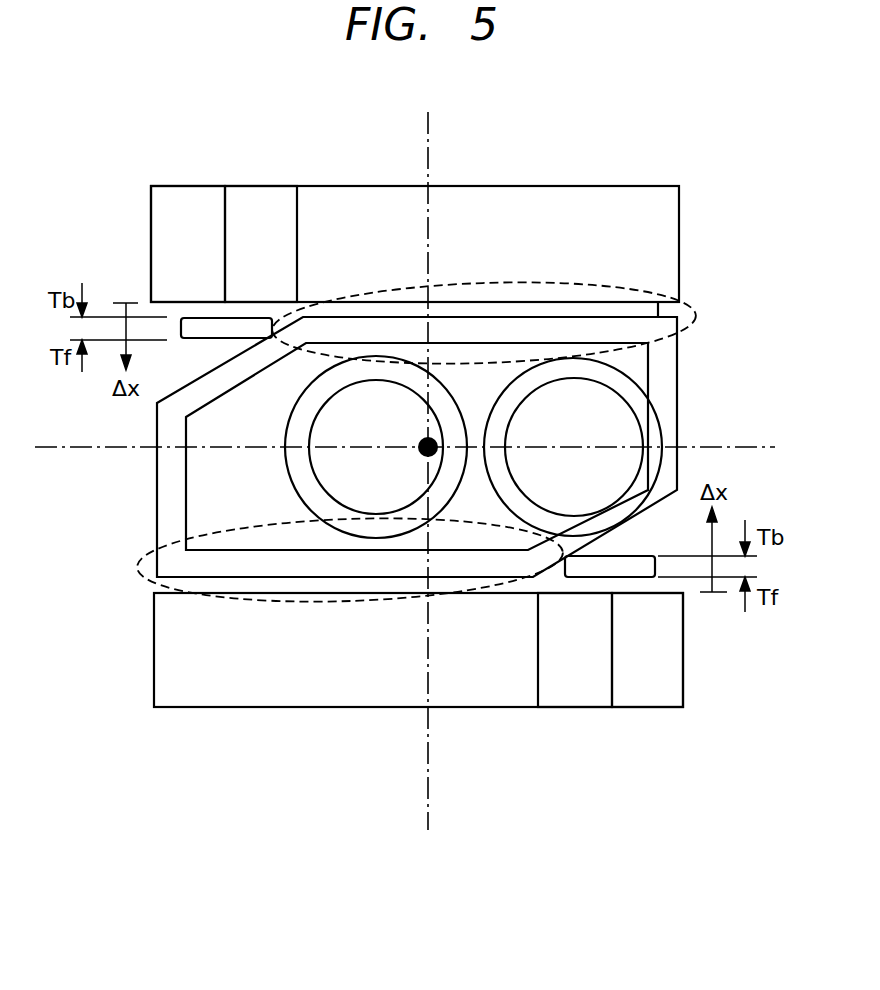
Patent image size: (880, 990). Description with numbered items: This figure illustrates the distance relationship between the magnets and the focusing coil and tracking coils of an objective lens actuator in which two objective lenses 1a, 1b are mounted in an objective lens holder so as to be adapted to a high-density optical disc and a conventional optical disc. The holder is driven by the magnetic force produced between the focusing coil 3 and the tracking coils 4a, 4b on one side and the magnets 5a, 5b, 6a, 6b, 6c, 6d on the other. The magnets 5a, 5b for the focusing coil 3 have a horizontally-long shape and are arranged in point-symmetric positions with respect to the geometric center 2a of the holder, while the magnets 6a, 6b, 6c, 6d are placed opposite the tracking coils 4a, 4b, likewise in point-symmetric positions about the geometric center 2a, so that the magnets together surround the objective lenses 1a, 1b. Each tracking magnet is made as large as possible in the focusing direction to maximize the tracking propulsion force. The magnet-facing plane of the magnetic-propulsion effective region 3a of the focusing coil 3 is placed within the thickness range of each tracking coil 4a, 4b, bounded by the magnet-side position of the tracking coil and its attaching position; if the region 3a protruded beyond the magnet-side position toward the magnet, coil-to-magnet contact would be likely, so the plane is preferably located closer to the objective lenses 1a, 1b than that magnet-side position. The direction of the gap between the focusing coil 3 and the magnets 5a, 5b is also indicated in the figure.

The objective lens 1a is at (328, 462).
The objective lens 1b is at (587, 435).
The geometric center of the objective lens holder 2a is at (428, 450).
The focusing coil 3 is at (667, 372).
The magnetic-propulsion effective region 3a is at (618, 292).
The tracking coil 4a is at (213, 327).
The tracking coil 4b is at (623, 565).
The magnet for the focusing coil 5a is at (490, 220).
The magnet for the focusing coil 5b is at (328, 692).
The magnet for the tracking coil 6a is at (200, 218).
The magnet for the tracking coil 6b is at (262, 202).
The magnet for the tracking coil 6c is at (640, 690).
The magnet for the tracking coil 6d is at (568, 690).